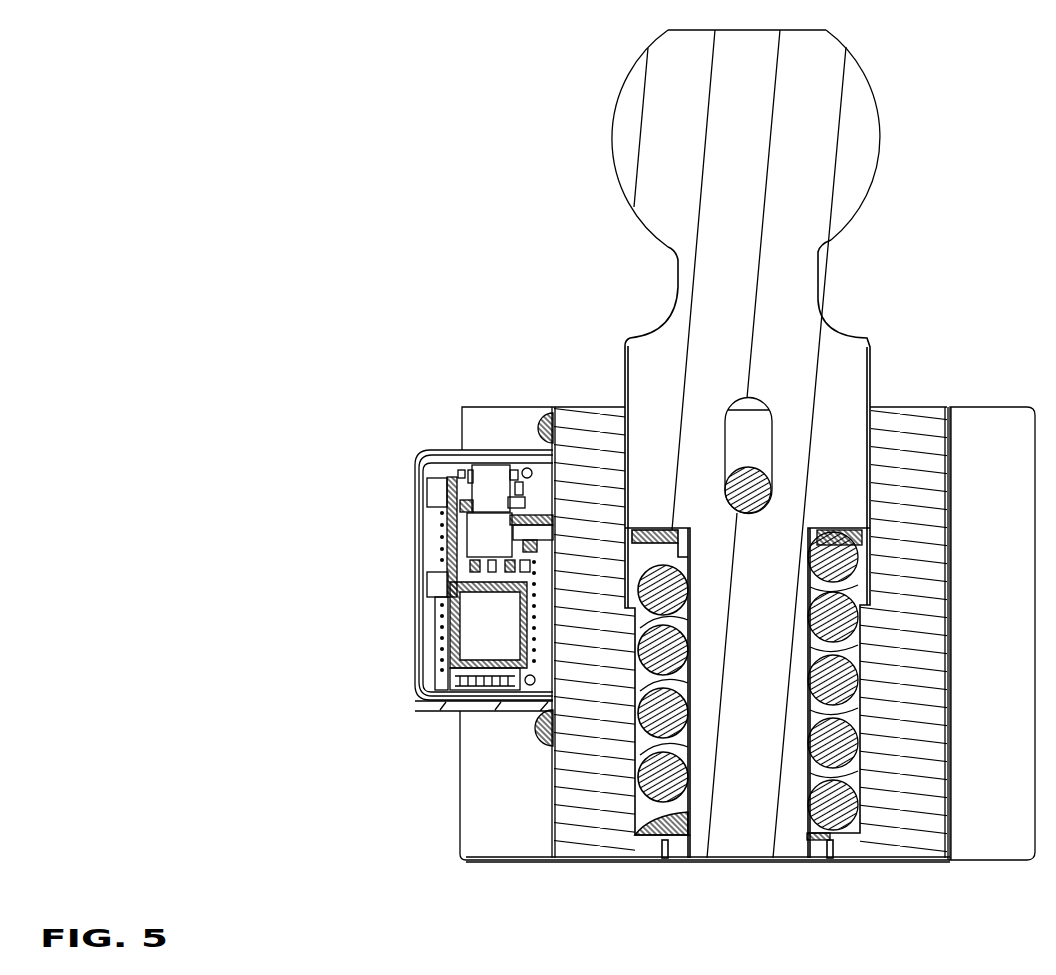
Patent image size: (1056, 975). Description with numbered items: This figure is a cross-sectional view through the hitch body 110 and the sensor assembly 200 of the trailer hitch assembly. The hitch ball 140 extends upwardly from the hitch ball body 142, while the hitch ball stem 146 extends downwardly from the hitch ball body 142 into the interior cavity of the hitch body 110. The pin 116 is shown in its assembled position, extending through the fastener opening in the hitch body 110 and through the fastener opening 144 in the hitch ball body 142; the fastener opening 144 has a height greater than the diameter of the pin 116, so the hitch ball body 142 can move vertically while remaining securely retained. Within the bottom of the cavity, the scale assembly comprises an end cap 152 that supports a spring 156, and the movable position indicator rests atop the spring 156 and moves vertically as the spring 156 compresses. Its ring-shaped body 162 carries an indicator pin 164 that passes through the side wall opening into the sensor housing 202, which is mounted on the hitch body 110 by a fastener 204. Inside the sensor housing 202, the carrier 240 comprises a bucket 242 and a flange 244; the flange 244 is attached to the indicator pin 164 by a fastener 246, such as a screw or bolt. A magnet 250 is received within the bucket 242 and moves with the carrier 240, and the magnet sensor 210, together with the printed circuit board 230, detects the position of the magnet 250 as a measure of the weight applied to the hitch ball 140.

The hitch body 110 is at (962, 860).
The pin 116 is at (747, 490).
The hitch ball 140 is at (880, 108).
The hitch ball body 142 is at (872, 362).
The fastener opening 144 is at (740, 399).
The hitch ball stem 146 is at (750, 833).
The end cap 152 is at (820, 843).
The spring 156 is at (838, 740).
The ring-shaped body 162 is at (835, 538).
The indicator pin 164 is at (547, 535).
The sensor assembly 200 is at (445, 533).
The sensor housing 202 is at (417, 667).
The fastener 204 is at (540, 730).
The magnet sensor 210 is at (447, 462).
The printed circuit board 230 is at (453, 462).
The carrier 240 is at (490, 568).
The bucket 242 is at (477, 527).
The flange 244 is at (543, 523).
The fastener 246 is at (530, 512).
The magnet 250 is at (488, 480).